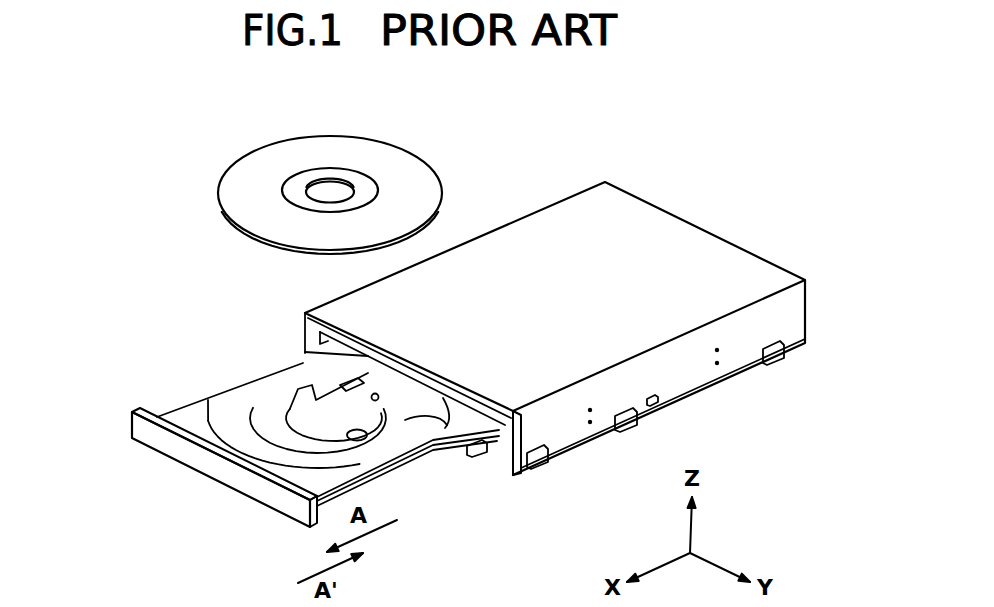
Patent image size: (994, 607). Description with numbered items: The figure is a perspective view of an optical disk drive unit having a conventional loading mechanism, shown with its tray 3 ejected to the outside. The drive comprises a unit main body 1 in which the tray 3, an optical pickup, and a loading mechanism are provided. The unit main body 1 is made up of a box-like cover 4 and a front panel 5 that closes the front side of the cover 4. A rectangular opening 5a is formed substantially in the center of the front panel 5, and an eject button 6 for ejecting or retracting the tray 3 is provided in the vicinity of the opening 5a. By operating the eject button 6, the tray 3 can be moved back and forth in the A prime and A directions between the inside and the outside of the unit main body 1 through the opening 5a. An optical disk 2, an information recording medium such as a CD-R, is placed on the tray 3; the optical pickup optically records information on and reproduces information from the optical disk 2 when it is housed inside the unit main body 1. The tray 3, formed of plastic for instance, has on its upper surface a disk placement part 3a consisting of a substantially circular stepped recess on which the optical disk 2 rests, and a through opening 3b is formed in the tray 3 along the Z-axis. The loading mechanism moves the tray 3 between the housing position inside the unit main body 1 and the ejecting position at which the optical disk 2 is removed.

The unit main body 1 is at (635, 182).
The optical disk 2 is at (422, 177).
The tray 3 is at (183, 407).
The disk placement part 3a is at (267, 420).
The through opening 3b is at (377, 453).
The cover 4 is at (697, 225).
The front panel 5 is at (522, 445).
The opening 5a is at (514, 476).
The eject button 6 is at (478, 455).